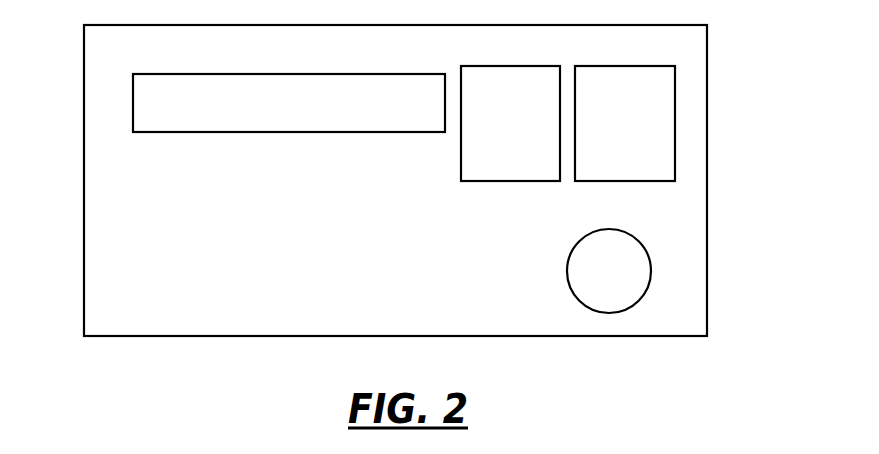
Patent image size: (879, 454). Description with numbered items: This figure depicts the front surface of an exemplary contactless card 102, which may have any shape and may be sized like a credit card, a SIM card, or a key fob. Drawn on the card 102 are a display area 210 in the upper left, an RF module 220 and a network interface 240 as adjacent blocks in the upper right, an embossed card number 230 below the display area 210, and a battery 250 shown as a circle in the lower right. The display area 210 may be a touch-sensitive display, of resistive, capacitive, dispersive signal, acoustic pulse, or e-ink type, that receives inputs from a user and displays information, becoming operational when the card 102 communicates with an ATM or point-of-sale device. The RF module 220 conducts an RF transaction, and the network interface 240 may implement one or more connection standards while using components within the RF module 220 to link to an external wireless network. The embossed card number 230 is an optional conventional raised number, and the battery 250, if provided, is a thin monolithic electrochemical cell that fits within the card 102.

The card 102 is at (706, 172).
The display area 210 is at (289, 103).
The RF module 220 is at (625, 123).
The embossed card number 230 is at (184, 203).
The network interface 240 is at (510, 123).
The battery 250 is at (609, 271).